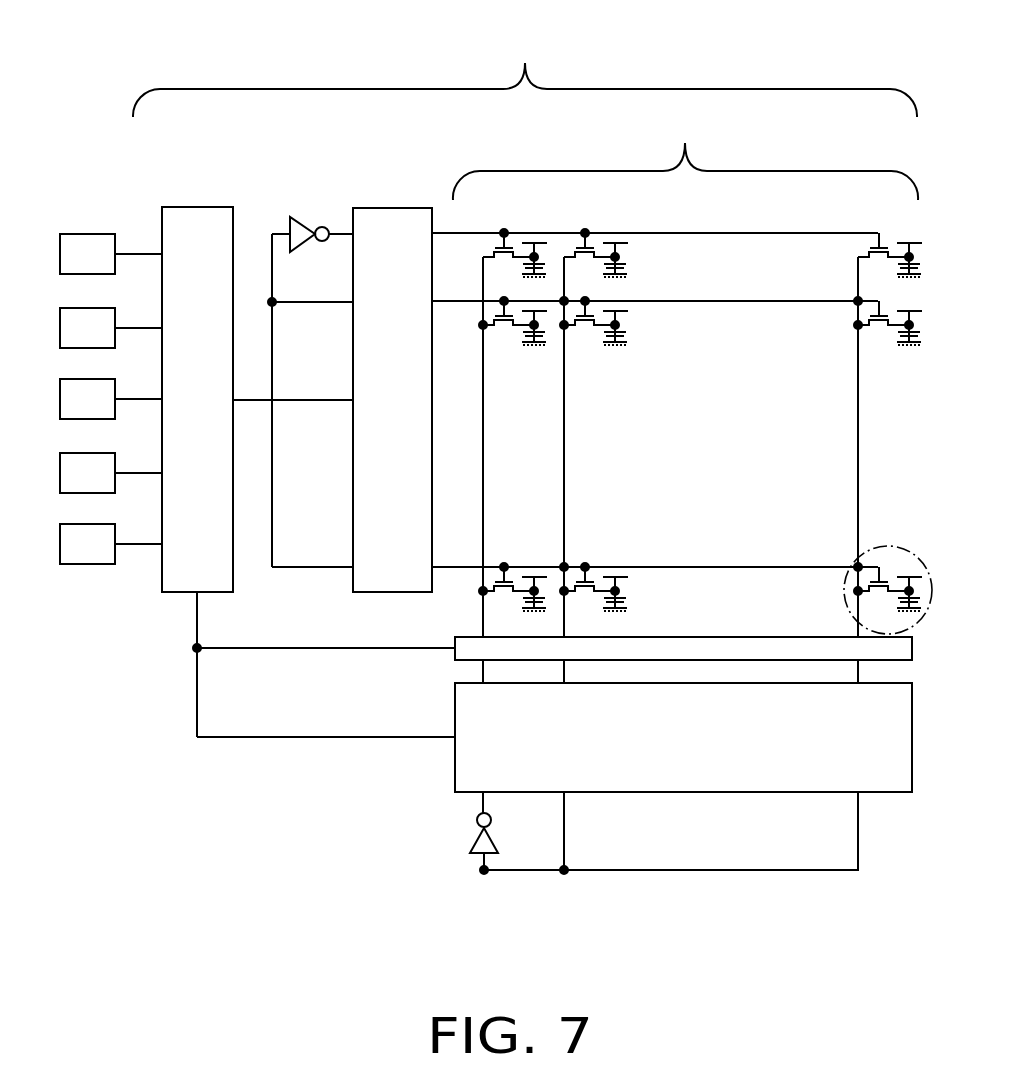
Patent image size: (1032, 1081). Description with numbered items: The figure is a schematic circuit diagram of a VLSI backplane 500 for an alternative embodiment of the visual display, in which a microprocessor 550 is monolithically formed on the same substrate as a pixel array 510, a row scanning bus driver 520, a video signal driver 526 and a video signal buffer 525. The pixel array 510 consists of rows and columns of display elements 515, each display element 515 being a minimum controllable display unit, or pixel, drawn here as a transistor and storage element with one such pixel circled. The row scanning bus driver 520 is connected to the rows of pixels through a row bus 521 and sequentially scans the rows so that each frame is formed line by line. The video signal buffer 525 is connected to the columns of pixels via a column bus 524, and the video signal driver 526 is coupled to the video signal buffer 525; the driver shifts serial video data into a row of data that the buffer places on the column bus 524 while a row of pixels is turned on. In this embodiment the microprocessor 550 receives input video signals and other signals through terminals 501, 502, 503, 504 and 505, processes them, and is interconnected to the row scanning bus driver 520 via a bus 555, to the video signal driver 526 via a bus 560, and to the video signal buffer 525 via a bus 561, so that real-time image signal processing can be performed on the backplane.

The VLSI backplane 500 is at (525, 73).
The pixel array 510 is at (685, 155).
The clock terminal 501 is at (110, 267).
The row control signal terminal 502 is at (110, 341).
The clock pulse terminal 503 is at (110, 412).
The serial video data terminal 504 is at (110, 486).
The synchronized signal terminal 505 is at (110, 557).
The microprocessor 550 is at (222, 380).
The row scanning bus driver 520 is at (414, 380).
The bus 555 is at (333, 402).
The row bus 521 is at (447, 302).
The display element 515 is at (877, 547).
The column bus 524 is at (564, 603).
The video signal buffer 525 is at (803, 622).
The video signal driver 526 is at (655, 752).
The bus 560 is at (230, 737).
The bus 561 is at (230, 648).